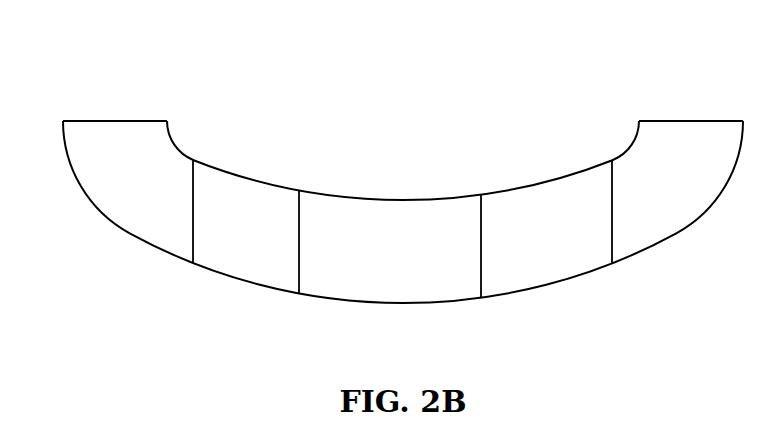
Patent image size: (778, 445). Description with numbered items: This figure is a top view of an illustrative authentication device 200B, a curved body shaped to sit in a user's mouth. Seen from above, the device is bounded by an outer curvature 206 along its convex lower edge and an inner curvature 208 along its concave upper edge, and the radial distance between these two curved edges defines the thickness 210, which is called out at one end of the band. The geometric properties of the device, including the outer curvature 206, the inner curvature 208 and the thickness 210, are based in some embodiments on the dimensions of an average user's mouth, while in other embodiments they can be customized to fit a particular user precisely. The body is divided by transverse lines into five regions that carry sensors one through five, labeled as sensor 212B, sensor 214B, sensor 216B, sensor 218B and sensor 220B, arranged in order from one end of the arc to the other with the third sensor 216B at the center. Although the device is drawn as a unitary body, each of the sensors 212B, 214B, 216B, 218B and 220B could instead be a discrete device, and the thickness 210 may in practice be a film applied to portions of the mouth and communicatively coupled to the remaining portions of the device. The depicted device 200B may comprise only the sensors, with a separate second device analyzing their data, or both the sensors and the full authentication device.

The authentication device 200B is at (140, 68).
The outer curvature 206 is at (103, 218).
The inner curvature 208 is at (422, 180).
The thickness 210 is at (637, 94).
The sensor 1 212B is at (102, 171).
The sensor 2 214B is at (220, 222).
The sensor 3 216B is at (364, 248).
The sensor 4 218B is at (521, 222).
The sensor 5 220B is at (652, 171).